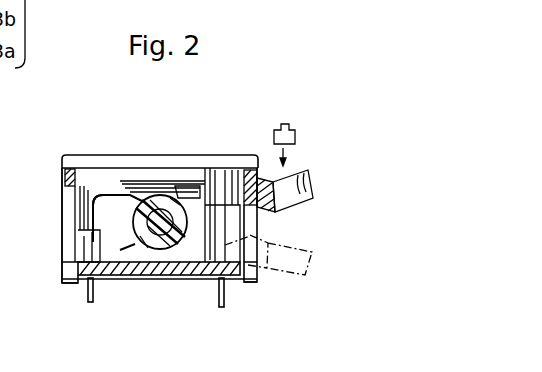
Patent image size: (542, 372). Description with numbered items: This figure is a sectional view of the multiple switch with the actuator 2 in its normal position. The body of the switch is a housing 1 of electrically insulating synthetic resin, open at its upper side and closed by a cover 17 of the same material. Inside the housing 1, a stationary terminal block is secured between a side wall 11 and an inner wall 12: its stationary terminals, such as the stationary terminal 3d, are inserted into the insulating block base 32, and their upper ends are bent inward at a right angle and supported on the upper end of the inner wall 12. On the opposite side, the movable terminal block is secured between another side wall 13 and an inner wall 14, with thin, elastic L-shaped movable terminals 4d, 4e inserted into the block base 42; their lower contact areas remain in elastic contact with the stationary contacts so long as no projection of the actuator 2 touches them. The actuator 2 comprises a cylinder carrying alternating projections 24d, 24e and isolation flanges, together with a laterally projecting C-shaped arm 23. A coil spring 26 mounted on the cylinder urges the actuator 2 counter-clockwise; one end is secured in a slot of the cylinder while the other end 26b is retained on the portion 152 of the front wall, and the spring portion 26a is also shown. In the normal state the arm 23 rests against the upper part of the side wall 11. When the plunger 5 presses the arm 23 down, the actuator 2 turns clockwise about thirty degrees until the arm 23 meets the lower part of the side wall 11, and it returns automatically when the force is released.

The housing 1 is at (168, 281).
The actuator 2 is at (145, 258).
The stationary terminal 3d is at (252, 167).
The movable terminal 4d is at (86, 162).
The movable terminal 4e is at (189, 162).
The plunger 5 is at (297, 129).
The side wall 11 is at (256, 184).
The inner wall 12 is at (208, 262).
The side wall 13 is at (63, 185).
The inner wall 14 is at (105, 280).
The cover 17 is at (230, 162).
The C-shaped arm 23 is at (273, 210).
The projection 24d is at (86, 214).
The projection 24e is at (202, 167).
The coil spring 26 is at (158, 158).
The spring wire lower leg 26a is at (128, 262).
The other end of the coil spring 26b is at (102, 160).
The block base 32 is at (255, 270).
The block base 42 is at (77, 277).
The portion 152 is at (125, 158).